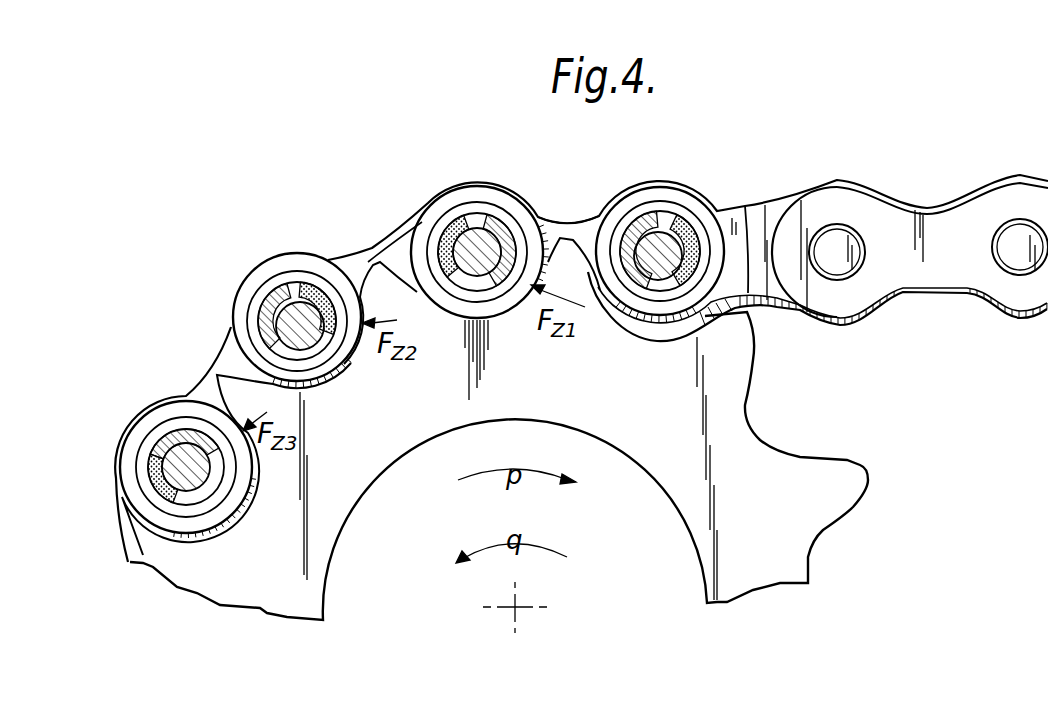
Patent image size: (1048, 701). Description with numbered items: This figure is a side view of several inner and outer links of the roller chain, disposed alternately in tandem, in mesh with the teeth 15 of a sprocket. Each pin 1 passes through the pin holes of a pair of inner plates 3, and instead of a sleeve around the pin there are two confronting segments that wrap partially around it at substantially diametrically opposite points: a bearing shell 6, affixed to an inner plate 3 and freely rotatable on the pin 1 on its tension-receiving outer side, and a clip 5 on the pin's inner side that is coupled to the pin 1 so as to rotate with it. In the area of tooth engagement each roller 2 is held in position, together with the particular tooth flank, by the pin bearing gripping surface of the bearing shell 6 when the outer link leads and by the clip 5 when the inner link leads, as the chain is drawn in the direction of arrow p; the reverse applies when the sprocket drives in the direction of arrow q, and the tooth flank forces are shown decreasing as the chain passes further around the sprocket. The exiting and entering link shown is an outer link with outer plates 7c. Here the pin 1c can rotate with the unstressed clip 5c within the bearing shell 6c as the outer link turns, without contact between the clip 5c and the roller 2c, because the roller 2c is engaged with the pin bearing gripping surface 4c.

The pin 1 is at (307, 343).
The roller 2 is at (250, 325).
The inner plate 3 is at (778, 209).
The clip 5 is at (303, 287).
The bearing shell 6 is at (285, 316).
The teeth 15 is at (812, 478).
The pin 1c is at (480, 273).
The roller 2c is at (450, 212).
The pin bearing gripping surface 4c is at (513, 250).
The clip 5c is at (427, 228).
The bearing shell 6c is at (486, 230).
The outer plates 7c is at (573, 232).